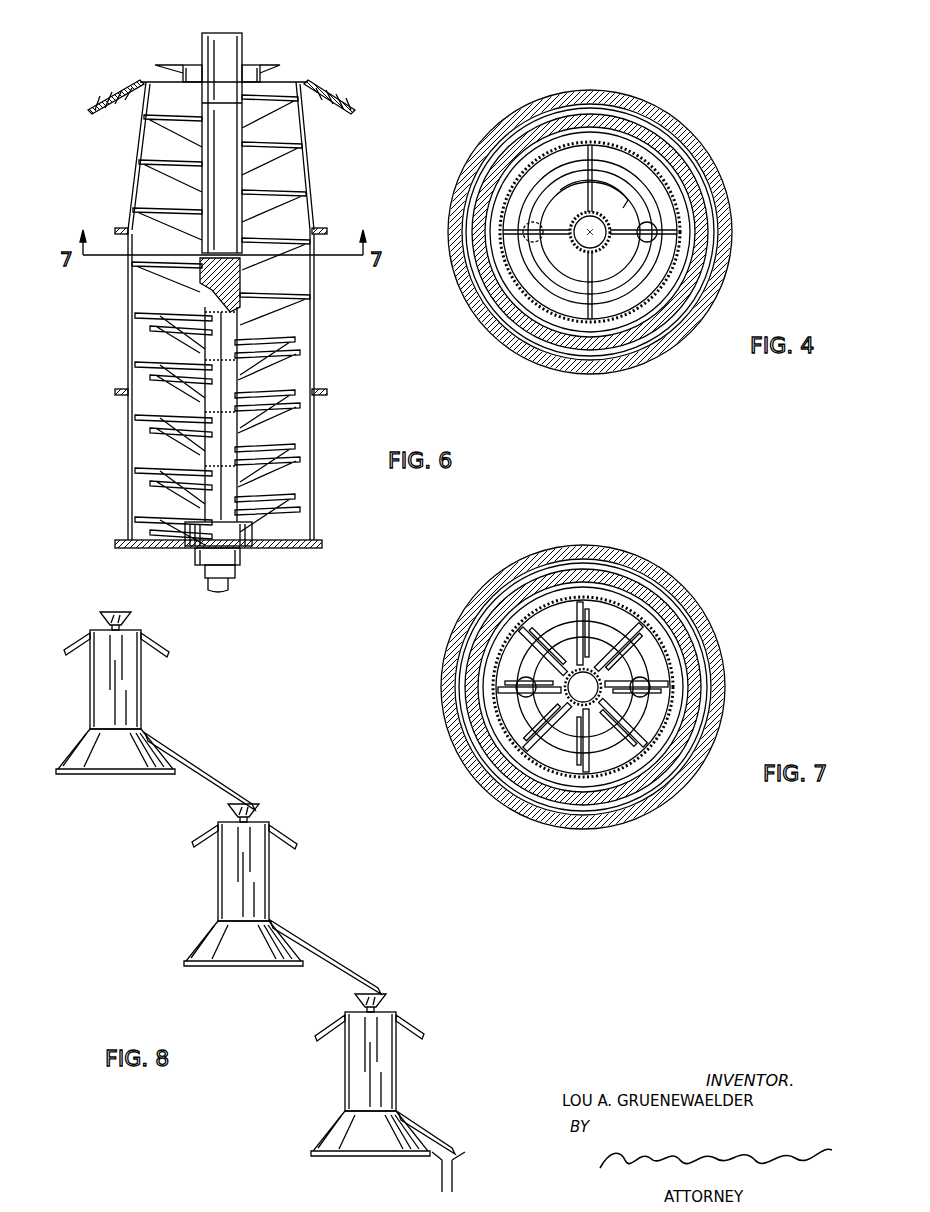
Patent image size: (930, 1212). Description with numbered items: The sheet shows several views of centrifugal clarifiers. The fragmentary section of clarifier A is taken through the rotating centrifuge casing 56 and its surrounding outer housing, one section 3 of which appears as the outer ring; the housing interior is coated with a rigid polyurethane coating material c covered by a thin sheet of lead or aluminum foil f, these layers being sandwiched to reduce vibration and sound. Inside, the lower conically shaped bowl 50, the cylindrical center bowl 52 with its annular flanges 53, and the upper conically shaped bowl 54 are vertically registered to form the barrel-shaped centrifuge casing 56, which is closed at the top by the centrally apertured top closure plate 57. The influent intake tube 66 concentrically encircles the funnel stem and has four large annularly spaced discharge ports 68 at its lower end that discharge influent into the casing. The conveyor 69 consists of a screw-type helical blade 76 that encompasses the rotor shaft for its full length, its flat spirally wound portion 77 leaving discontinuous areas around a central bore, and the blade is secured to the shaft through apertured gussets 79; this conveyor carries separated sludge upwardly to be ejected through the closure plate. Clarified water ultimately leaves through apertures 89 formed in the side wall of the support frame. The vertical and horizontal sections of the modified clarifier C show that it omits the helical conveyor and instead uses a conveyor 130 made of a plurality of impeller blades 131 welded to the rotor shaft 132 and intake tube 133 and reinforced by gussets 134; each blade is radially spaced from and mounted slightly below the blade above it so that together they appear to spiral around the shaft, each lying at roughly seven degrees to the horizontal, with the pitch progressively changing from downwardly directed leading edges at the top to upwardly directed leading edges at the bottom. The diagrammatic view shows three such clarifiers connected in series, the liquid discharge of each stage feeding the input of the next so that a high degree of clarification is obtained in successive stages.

In FIG. 4, the housing section 3 is at (615, 95).
In FIG. 6, the lower conically shaped bowl 50 is at (308, 512).
In FIG. 6, the cylindrical center bowl 52 is at (305, 346).
In FIG. 4, the cylindrical center bowl 52 is at (515, 268).
In FIG. 4, the annular flanges 53 is at (600, 118).
In FIG. 6, the upper conically shaped bowl 54 is at (308, 156).
In FIG. 4, the centrifuge casing 56 is at (680, 215).
In FIG. 4, the top closure plate 57 is at (628, 210).
In FIG. 4, the influent intake tube 66 is at (585, 258).
In FIG. 4, the discharge ports 68 is at (612, 250).
In FIG. 4, the conveyor 69 is at (665, 262).
In FIG. 8, the conveyor 69 is at (205, 776).
In FIG. 4, the helical blade 76 is at (620, 160).
In FIG. 4, the flat spirally wound portion 77 is at (640, 168).
In FIG. 4, the gussets 79 is at (588, 272).
In FIG. 8, the apertures 89 is at (330, 960).
In FIG. 6, the conveyor 130 is at (305, 364).
In FIG. 7, the conveyor 130 is at (668, 663).
In FIG. 6, the impeller blades 131 is at (298, 418).
In FIG. 7, the impeller blades 131 is at (662, 692).
In FIG. 6, the rotor shaft 132 is at (300, 388).
In FIG. 6, the intake tube 133 is at (247, 223).
In FIG. 7, the intake tube 133 is at (533, 730).
In FIG. 6, the gussets 134 is at (300, 470).
In FIG. 7, the gussets 134 is at (600, 612).
In FIG. 6, the centrifugal clarifier C is at (345, 92).
In FIG. 7, the centrifugal clarifier C is at (703, 600).
In FIG. 4, the centrifugal clarifier A is at (672, 352).
In FIG. 4, the rigid polyurethane coating material c is at (454, 189).
In FIG. 4, the lead or aluminum foil sheet f is at (552, 85).